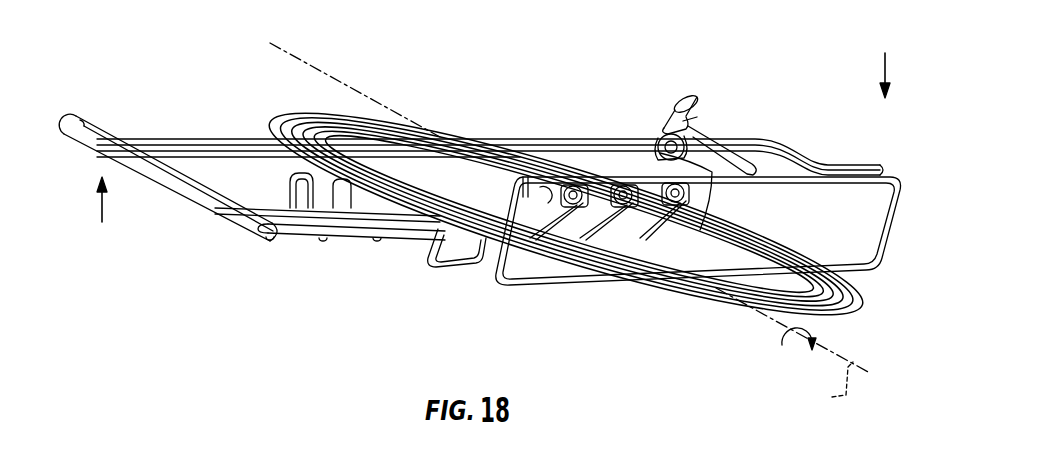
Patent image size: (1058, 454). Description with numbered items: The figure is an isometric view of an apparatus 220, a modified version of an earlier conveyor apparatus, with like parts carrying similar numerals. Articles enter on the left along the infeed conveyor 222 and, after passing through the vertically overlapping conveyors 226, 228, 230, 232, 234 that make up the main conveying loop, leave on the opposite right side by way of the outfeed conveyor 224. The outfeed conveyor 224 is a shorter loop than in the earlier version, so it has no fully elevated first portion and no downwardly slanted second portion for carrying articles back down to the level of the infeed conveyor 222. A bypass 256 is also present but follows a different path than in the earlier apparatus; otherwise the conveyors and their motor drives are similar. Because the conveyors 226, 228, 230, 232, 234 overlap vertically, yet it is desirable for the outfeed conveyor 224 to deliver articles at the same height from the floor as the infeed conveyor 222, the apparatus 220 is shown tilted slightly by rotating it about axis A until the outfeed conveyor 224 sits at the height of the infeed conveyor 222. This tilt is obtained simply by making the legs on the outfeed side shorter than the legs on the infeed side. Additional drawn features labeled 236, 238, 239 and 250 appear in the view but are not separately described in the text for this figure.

The apparatus 220 is at (793, 84).
The infeed conveyor 222 is at (81, 120).
The outfeed conveyor 224 is at (883, 177).
The conveyor 226 is at (274, 117).
The conveyor 228 is at (323, 126).
The conveyor 230 is at (357, 136).
The conveyor 232 is at (408, 144).
The conveyor 234 is at (457, 157).
The support bracket 236 is at (279, 191).
The pivot bar 238 is at (597, 168).
The rotation direction 239 is at (640, 337).
The locking pin 250 is at (753, 168).
The bypass 256 is at (247, 140).